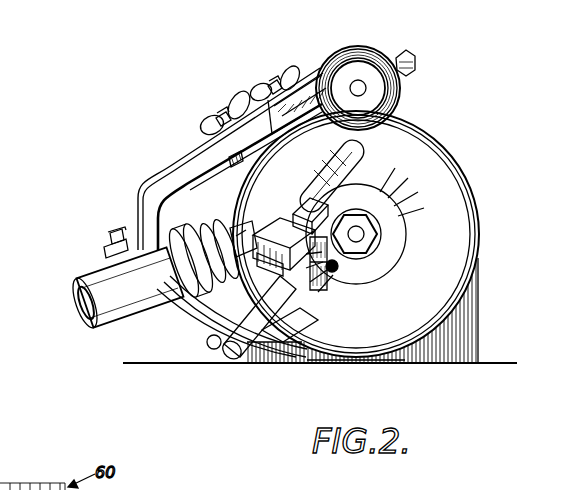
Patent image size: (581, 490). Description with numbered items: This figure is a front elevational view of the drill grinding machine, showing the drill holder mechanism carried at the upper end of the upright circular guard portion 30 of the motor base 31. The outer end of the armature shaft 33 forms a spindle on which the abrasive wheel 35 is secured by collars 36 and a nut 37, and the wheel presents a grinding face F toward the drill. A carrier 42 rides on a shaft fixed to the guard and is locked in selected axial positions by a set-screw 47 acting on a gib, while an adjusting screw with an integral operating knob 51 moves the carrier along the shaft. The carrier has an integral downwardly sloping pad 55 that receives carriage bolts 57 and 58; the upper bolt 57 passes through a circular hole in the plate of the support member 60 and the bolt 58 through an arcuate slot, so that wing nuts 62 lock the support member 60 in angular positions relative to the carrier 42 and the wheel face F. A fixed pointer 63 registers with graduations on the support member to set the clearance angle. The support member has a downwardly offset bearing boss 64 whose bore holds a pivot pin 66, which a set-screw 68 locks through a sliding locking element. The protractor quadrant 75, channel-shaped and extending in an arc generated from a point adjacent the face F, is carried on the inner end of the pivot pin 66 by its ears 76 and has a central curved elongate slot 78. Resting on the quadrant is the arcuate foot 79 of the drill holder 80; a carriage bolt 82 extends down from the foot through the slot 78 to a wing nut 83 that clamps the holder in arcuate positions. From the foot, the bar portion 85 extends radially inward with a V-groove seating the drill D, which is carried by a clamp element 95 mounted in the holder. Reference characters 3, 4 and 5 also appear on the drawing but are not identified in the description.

The frame member 3 is at (193, 174).
The tool holder assembly 4 is at (232, 66).
The pivot axis 5 is at (412, 56).
The circular guard portion 30 is at (470, 190).
The motor base 31 is at (463, 364).
The armature shaft 33 is at (375, 205).
The abrasive wheel 35 is at (452, 173).
The collars 36 is at (398, 244).
The nut 37 is at (410, 256).
The carrier 42 is at (307, 70).
The set-screw 47 is at (417, 64).
The operating knob 51 is at (368, 43).
The downwardly sloping pad 55 is at (256, 150).
The carriage bolt 57 is at (273, 80).
The carriage bolt 58 is at (236, 95).
The support member 60 is at (151, 173).
The wing nuts 62 is at (210, 117).
The fixed pointer 63 is at (176, 161).
The bearing boss 64 is at (118, 308).
The pivot pin 66 is at (83, 305).
The set-screw 68 is at (109, 238).
The protractor quadrant 75 is at (213, 301).
The ears 76 is at (177, 257).
The curved elongate slot 78 is at (203, 297).
The arcuate foot 79 is at (228, 308).
The drill holder 80 is at (255, 226).
The carriage bolt 82 is at (232, 317).
The wing nut 83 is at (212, 350).
The bar portion 85 is at (228, 158).
The clamp element 95 is at (330, 280).
The drill D is at (352, 170).
The face of the grinding wheel F is at (452, 213).